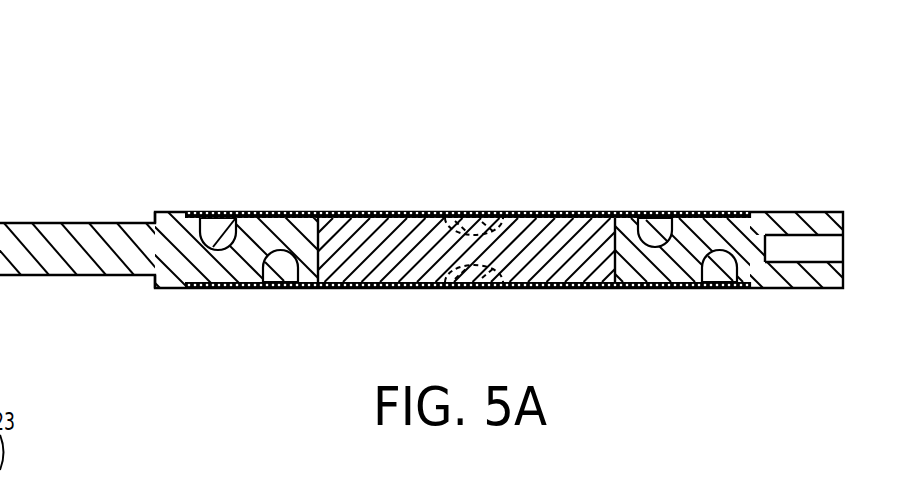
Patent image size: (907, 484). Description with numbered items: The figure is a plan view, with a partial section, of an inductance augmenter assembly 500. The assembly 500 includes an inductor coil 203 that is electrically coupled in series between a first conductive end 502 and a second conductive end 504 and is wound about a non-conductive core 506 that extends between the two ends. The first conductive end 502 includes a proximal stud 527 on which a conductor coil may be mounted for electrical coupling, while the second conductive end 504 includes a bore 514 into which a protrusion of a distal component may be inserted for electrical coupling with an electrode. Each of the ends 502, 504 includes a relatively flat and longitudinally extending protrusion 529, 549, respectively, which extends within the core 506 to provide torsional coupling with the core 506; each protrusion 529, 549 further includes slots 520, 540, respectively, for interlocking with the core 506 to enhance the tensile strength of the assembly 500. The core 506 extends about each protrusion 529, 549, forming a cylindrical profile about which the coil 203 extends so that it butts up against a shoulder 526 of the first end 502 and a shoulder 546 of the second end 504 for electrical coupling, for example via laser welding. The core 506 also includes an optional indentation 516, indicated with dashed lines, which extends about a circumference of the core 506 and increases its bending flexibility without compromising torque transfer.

The inductance augmenter assembly 500 is at (389, 112).
The first conductive end 502 is at (375, 256).
The second conductive end 504 is at (711, 248).
The proximal stud 527 is at (83, 237).
The shoulder 526 is at (180, 222).
The slots 520 is at (212, 228).
The inductor coil 203 is at (278, 222).
The non-conductive core 506 is at (365, 268).
The indentation 516 is at (472, 212).
The slots 540 is at (653, 230).
The shoulder 546 is at (764, 218).
The protrusion 549 is at (672, 267).
The bore 514 is at (816, 262).
The protrusion 529 is at (235, 268).